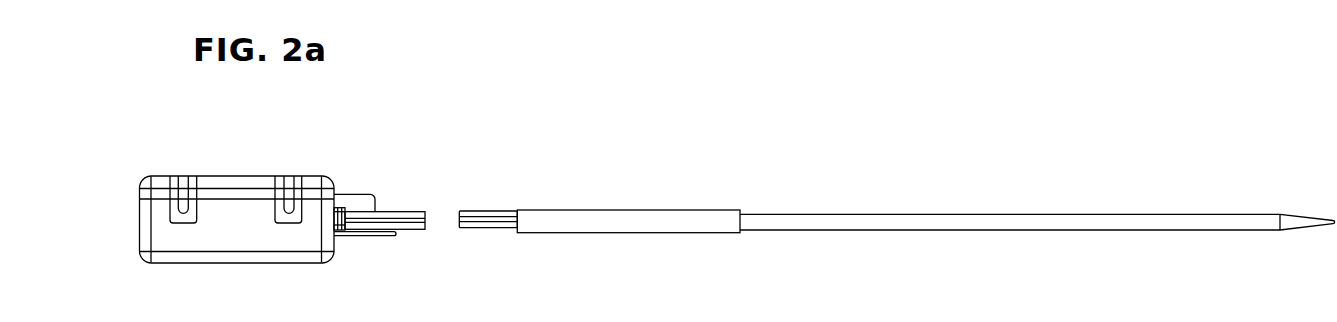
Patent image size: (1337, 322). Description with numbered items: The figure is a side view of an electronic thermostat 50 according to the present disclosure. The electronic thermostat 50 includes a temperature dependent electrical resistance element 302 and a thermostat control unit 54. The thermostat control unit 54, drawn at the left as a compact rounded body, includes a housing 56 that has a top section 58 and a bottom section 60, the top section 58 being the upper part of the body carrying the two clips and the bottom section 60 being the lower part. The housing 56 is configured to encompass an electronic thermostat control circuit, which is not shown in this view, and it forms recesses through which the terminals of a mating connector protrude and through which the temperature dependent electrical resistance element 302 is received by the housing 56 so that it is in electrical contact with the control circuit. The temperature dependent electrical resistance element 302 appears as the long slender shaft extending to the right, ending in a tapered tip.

The electronic thermostat 50 is at (470, 163).
The thermostat control unit 54 is at (140, 176).
The housing 56 is at (284, 277).
The top section 58 is at (224, 182).
The bottom section 60 is at (220, 242).
The temperature dependent electrical resistance element 302 is at (1125, 214).